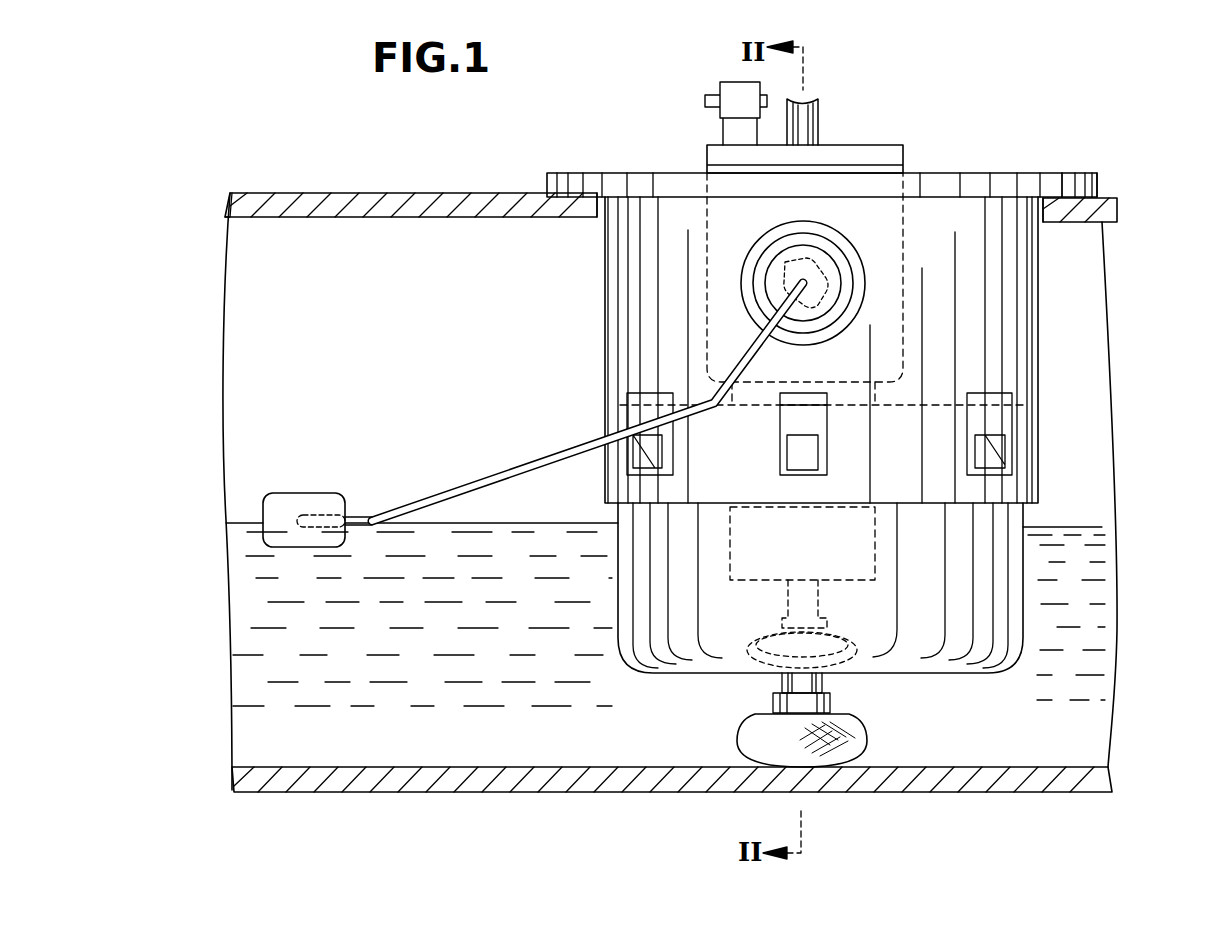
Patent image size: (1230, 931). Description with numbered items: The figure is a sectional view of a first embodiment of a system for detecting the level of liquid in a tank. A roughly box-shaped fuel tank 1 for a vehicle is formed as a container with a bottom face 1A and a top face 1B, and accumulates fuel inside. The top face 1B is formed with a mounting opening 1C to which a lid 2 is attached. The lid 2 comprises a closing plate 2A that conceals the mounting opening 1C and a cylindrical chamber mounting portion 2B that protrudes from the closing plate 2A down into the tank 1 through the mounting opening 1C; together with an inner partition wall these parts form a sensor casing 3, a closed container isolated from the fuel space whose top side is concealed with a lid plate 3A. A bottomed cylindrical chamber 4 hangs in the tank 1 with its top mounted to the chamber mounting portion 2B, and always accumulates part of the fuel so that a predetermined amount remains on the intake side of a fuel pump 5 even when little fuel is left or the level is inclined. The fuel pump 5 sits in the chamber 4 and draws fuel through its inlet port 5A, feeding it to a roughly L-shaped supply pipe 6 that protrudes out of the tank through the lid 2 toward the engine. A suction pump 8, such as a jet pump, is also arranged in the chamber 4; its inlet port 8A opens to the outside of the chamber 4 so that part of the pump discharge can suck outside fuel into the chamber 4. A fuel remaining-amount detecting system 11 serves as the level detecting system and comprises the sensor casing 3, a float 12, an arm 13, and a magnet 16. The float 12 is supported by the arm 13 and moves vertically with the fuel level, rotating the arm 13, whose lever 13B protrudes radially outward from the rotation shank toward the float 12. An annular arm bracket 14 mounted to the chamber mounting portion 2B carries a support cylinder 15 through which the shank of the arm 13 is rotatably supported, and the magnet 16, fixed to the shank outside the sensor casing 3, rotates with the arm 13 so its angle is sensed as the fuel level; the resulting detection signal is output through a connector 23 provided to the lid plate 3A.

The fuel tank 1 is at (252, 203).
The bottom face 1A is at (415, 792).
The top face 1B is at (335, 203).
The mounting opening 1C is at (598, 205).
The lid 2 is at (547, 185).
The closing plate 2A is at (1067, 185).
The chamber mounting portion 2B is at (1010, 278).
The sensor casing 3 is at (902, 338).
The lid plate 3A is at (720, 157).
The chamber 4 is at (960, 567).
The fuel pump 5 is at (819, 684).
The inlet port 5A is at (788, 583).
The supply pipe 6 is at (800, 122).
The suction pump 8 is at (835, 767).
The inlet port 8A is at (822, 685).
The fuel remaining-amount detecting system 11 is at (890, 135).
The float 12 is at (262, 510).
The arm 13 is at (574, 404).
The lever 13B is at (540, 458).
The arm bracket 14 is at (840, 243).
The support cylinder 15 is at (830, 270).
The magnet 16 is at (798, 262).
The connector 23 is at (732, 90).